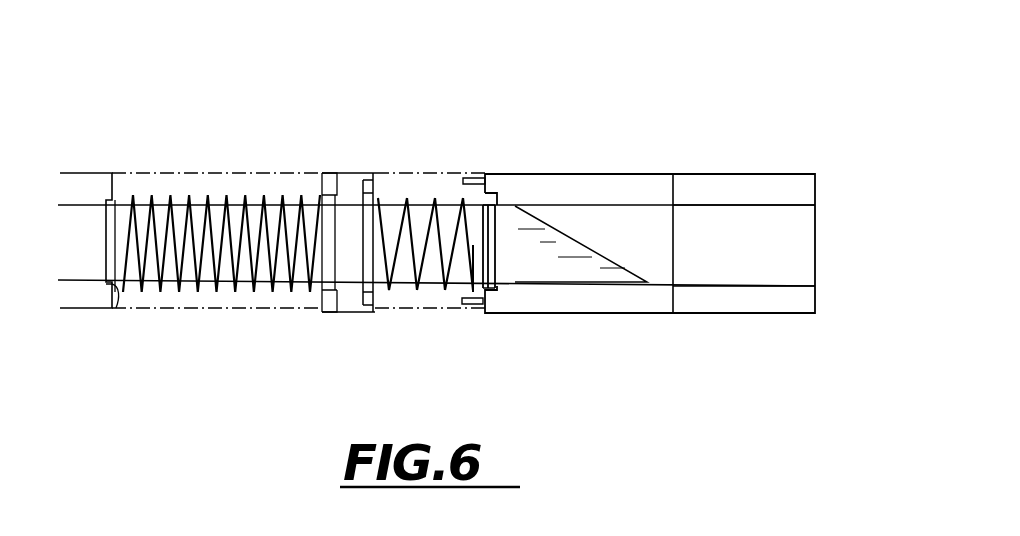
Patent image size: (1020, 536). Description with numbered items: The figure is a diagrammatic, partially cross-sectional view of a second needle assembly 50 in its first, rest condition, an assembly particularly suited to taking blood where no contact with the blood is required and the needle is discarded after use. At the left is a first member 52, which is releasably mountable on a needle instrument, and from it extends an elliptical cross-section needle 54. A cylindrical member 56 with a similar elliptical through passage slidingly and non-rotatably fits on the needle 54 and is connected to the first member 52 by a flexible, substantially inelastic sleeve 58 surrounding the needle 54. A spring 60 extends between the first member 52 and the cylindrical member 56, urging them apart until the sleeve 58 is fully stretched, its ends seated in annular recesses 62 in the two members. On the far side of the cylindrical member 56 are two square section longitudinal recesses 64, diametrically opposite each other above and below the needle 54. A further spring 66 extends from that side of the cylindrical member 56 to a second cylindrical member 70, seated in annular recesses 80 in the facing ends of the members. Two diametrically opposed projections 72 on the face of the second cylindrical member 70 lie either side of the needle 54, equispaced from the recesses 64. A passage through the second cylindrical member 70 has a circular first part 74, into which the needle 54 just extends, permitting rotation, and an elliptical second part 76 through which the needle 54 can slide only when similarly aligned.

The second needle assembly 50 is at (613, 87).
The first member 52 is at (92, 178).
The needle 54 is at (382, 213).
The cylindrical member 56 is at (349, 312).
The flexible substantially inelastic sleeve 58 is at (177, 173).
The spring 60 is at (268, 178).
The annular recesses 62 is at (335, 178).
The square section longitudinal recesses 64 is at (383, 178).
The further spring 66 is at (443, 290).
The second cylindrical member 70 is at (662, 173).
The projections 72 is at (468, 302).
The first part of the passage 74 is at (658, 268).
The second part of the passage 76 is at (800, 237).
The annular recesses 80 is at (498, 196).